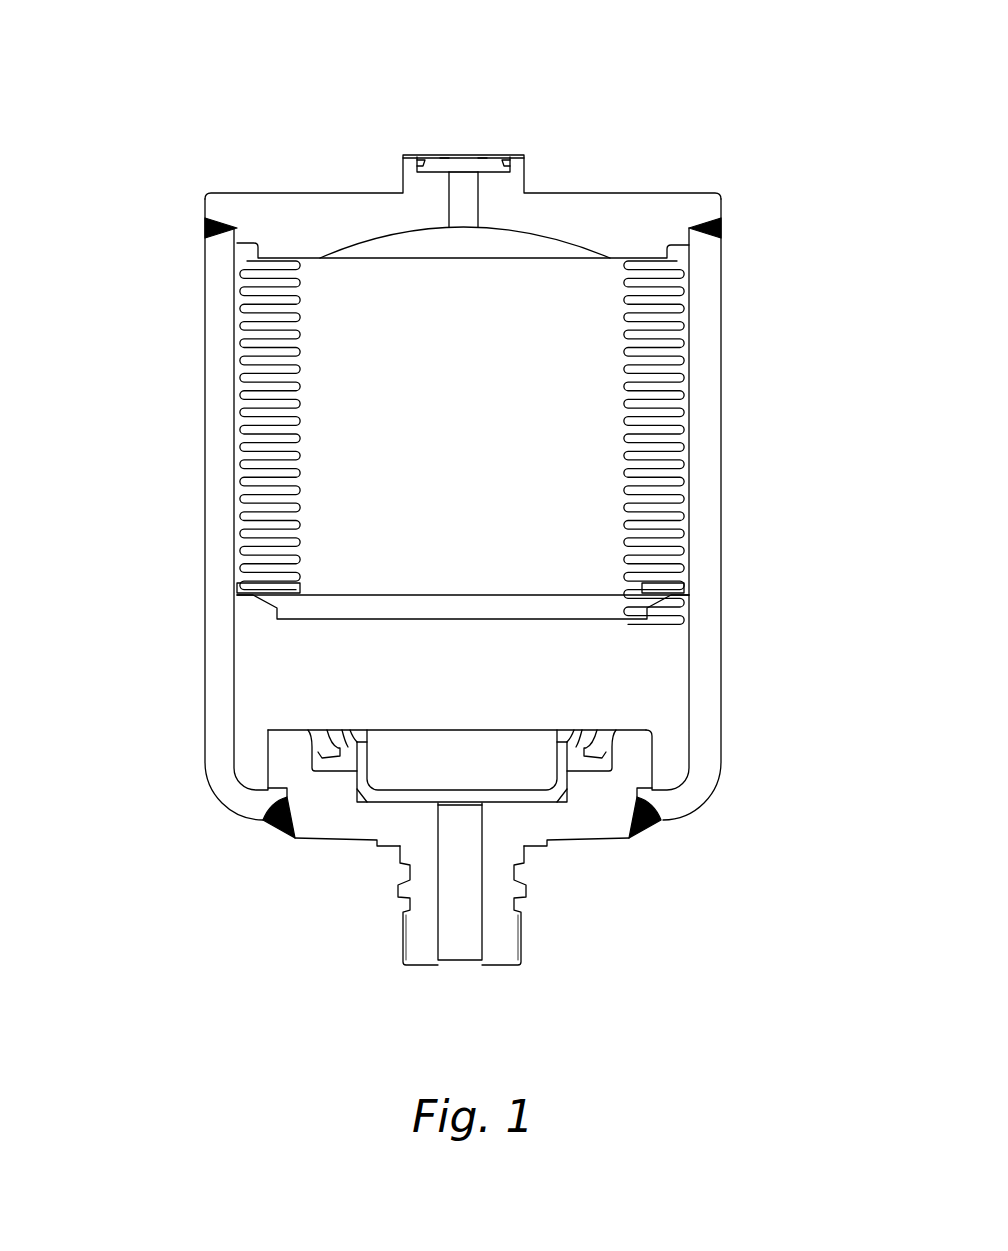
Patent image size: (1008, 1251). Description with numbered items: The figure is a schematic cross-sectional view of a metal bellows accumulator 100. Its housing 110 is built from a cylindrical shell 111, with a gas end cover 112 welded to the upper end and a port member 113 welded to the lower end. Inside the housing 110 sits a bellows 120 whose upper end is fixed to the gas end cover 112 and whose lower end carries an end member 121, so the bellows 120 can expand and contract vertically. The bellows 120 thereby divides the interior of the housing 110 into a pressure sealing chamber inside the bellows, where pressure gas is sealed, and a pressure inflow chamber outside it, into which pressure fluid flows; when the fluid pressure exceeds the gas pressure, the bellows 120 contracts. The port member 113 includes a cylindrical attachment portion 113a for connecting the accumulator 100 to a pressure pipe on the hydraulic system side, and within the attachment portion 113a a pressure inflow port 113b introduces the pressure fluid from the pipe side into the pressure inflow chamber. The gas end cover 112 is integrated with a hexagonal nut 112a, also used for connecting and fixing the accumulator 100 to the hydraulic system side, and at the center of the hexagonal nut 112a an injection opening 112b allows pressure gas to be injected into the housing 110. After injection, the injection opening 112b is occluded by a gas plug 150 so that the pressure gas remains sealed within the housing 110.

The accumulator 100 is at (697, 150).
The housing 110 is at (204, 395).
The cylindrical shell 111 is at (708, 355).
The gas end cover 112 is at (275, 203).
The hexagonal nut 112a is at (513, 182).
The injection opening 112b is at (456, 156).
The port member 113 is at (582, 835).
The attachment portion 113a is at (503, 950).
The pressure inflow port 113b is at (438, 940).
The bellows 120 is at (608, 483).
The end member 121 is at (648, 620).
The gas plug 150 is at (480, 152).